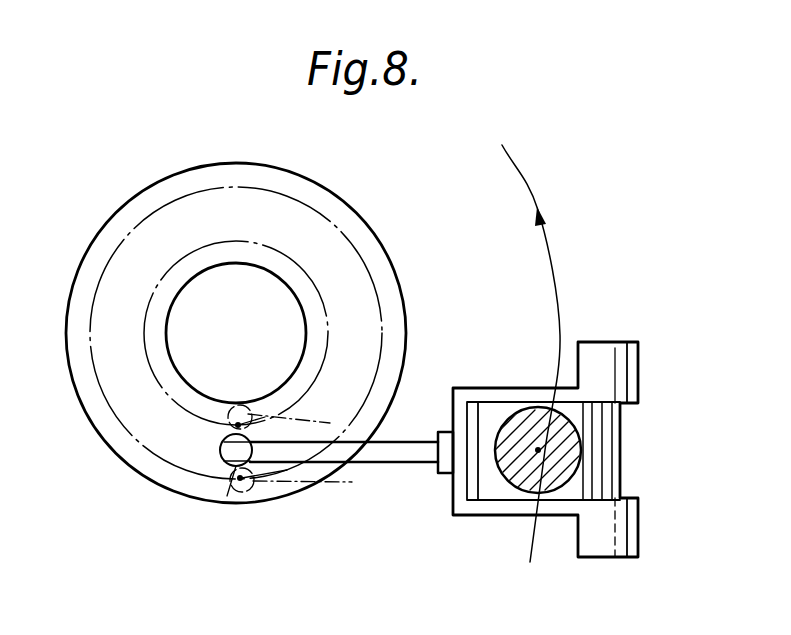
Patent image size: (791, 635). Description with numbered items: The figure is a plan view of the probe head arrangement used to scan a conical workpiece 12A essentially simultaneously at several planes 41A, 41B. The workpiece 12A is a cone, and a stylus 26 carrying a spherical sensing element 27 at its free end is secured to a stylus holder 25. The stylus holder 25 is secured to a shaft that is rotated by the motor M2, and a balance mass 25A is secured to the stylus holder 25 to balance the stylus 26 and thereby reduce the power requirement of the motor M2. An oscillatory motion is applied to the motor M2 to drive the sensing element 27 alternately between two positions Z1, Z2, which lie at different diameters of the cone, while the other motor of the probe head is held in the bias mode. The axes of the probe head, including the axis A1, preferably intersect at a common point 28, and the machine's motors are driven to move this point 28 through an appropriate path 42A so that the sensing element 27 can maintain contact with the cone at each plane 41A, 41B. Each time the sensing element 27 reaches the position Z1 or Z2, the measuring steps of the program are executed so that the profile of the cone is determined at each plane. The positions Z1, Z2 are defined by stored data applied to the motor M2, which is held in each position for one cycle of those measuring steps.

The workpiece 12A is at (162, 233).
The plane 41A is at (273, 247).
The plane 41B is at (353, 248).
The spherical sensing element 27 is at (222, 457).
The position Z1 is at (230, 422).
The position Z2 is at (240, 480).
The stylus 26 is at (385, 452).
The stylus holder 25 is at (503, 395).
The balance mass 25A is at (605, 350).
The motor M2 is at (607, 443).
The common point of intersection 28 is at (534, 457).
The axis A1 is at (538, 450).
The path 42A is at (548, 245).